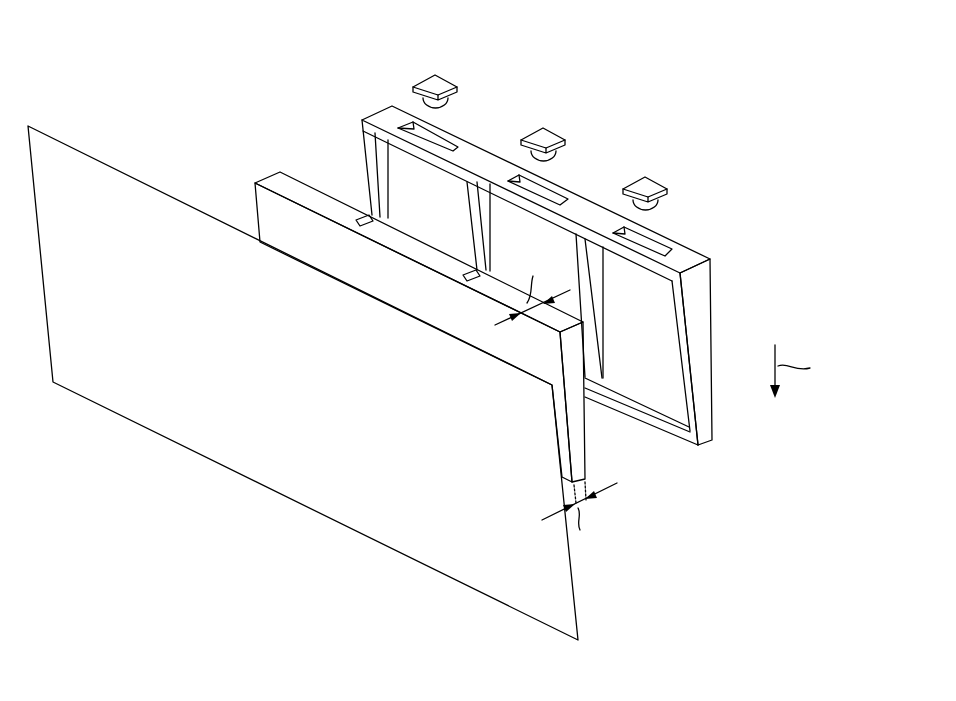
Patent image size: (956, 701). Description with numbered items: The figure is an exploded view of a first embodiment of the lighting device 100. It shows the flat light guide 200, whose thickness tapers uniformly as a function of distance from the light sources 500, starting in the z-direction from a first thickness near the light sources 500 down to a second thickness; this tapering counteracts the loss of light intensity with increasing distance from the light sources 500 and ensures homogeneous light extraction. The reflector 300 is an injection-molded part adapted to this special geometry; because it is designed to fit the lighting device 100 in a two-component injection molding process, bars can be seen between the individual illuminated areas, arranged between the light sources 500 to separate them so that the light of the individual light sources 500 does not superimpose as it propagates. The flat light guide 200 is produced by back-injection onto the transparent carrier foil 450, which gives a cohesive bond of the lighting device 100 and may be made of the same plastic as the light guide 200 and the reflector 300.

The lighting device 100 is at (806, 188).
The flat light guide 200 is at (278, 182).
The reflector 300 is at (383, 117).
The carrier foil 450 is at (283, 460).
The light source 500 is at (436, 73).